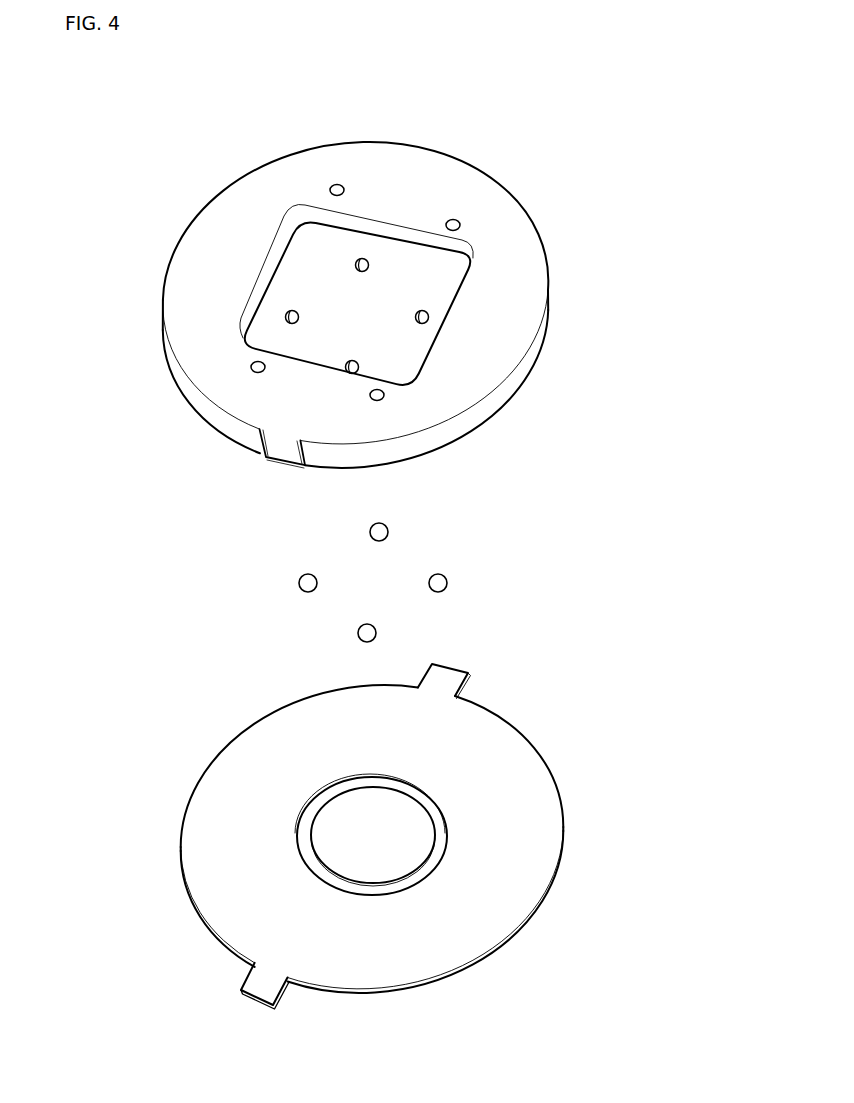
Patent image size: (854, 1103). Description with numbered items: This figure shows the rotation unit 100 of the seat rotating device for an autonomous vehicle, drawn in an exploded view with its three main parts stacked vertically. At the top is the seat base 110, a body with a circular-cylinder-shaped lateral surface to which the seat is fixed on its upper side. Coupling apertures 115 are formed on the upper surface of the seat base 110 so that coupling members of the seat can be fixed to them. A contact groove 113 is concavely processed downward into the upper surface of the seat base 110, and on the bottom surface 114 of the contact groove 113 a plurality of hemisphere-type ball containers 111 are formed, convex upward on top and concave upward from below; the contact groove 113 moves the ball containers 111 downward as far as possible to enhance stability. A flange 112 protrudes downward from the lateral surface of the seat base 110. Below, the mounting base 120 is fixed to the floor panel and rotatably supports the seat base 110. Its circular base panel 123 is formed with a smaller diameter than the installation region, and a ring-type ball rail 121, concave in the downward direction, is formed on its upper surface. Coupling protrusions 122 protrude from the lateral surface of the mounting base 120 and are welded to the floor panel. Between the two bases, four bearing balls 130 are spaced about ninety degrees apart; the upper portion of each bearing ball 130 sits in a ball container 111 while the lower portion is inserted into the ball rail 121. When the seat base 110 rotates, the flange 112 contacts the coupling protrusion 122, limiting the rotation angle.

The rotation unit 100 is at (401, 544).
The seat base 110 is at (555, 288).
The ball container 111 is at (286, 314).
The flange 112 is at (267, 462).
The contact groove 113 is at (272, 268).
The bottom surface 114 is at (407, 263).
The coupling aperture 115 is at (339, 184).
The mounting base 120 is at (574, 833).
The ball rail 121 is at (303, 814).
The coupling protrusion 122 is at (253, 982).
The base panel 123 is at (193, 860).
The bearing ball 130 is at (447, 582).